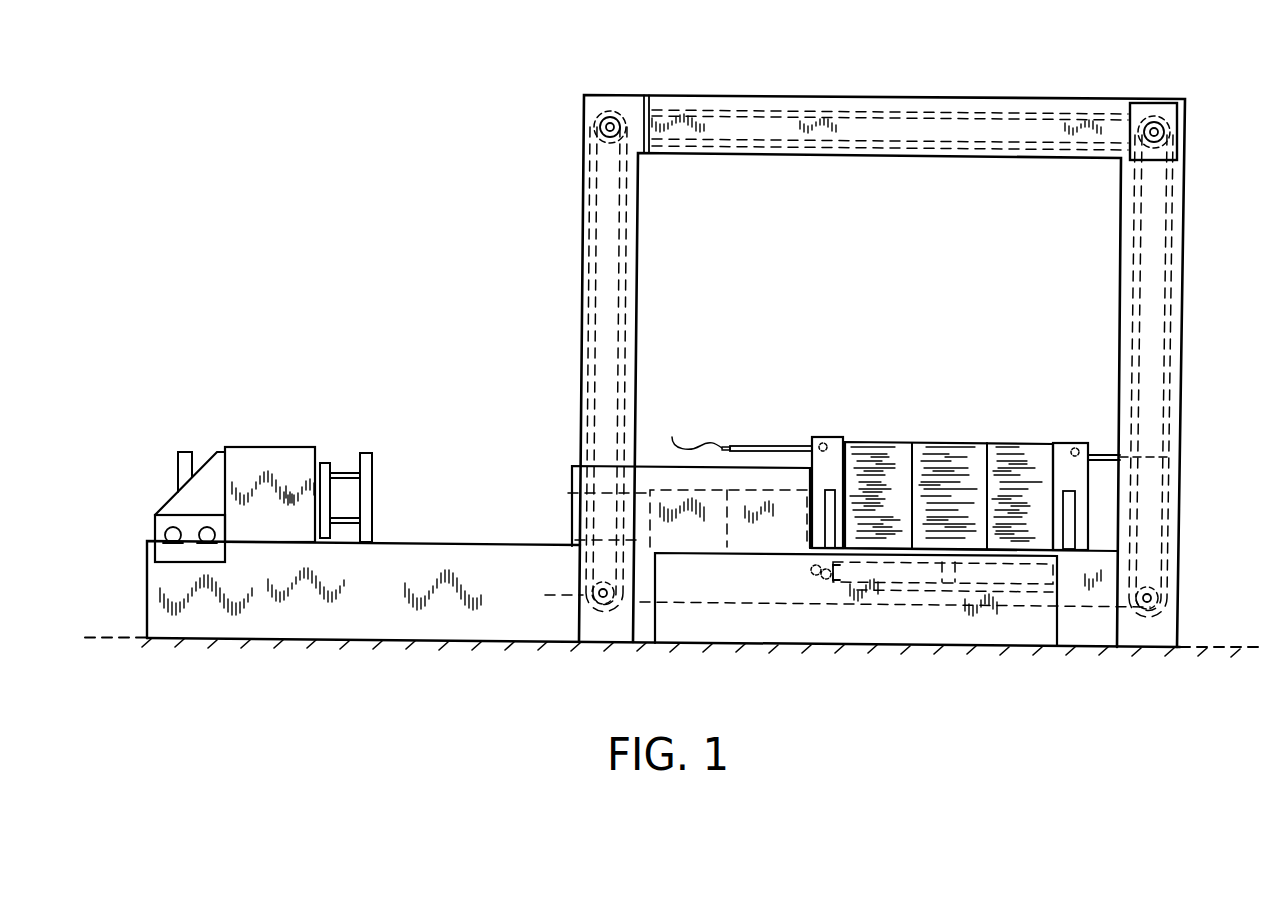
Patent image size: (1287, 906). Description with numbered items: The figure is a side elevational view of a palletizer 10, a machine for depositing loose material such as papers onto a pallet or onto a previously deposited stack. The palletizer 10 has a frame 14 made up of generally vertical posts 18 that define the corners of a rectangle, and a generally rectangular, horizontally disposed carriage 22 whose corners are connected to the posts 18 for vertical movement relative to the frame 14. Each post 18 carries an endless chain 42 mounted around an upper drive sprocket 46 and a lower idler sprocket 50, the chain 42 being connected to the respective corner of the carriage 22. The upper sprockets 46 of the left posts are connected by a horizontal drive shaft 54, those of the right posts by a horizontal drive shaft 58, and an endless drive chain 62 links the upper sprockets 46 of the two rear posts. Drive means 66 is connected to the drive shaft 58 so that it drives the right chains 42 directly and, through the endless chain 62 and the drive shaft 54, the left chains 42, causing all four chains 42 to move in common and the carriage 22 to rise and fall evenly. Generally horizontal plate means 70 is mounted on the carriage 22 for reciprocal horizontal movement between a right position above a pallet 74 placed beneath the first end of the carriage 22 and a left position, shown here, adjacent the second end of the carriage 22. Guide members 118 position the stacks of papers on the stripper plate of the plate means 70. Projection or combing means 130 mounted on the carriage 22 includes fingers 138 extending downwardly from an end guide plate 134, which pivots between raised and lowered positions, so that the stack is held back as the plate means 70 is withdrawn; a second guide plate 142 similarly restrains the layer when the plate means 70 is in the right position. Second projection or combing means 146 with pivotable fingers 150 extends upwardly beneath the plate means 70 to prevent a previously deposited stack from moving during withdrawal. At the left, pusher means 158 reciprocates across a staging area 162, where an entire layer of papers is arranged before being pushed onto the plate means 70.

The palletizer 10 is at (778, 86).
The frame 14 is at (1197, 258).
The posts 18 is at (612, 344).
The carriage 22 is at (1105, 585).
The endless chain 42 is at (590, 283).
The upper drive sprocket 46 is at (616, 112).
The lower idler sprocket 50 is at (593, 595).
The horizontal drive shaft 54 is at (593, 138).
The horizontal drive shaft 58 is at (1148, 165).
The endless drive chain 62 is at (925, 110).
The drive means 66 is at (1165, 102).
The plate means 70 is at (700, 555).
The pallet 74 is at (935, 572).
The guide members 118 is at (768, 470).
The projection or combing means 130 is at (735, 420).
The end guide member or plate 134 is at (800, 440).
The fingers 138 is at (730, 428).
The second guide member or plate 142 is at (1100, 440).
The second projection or combing means 146 is at (815, 578).
The fingers 150 is at (805, 570).
The pusher means 158 is at (285, 465).
The staging area 162 is at (470, 530).